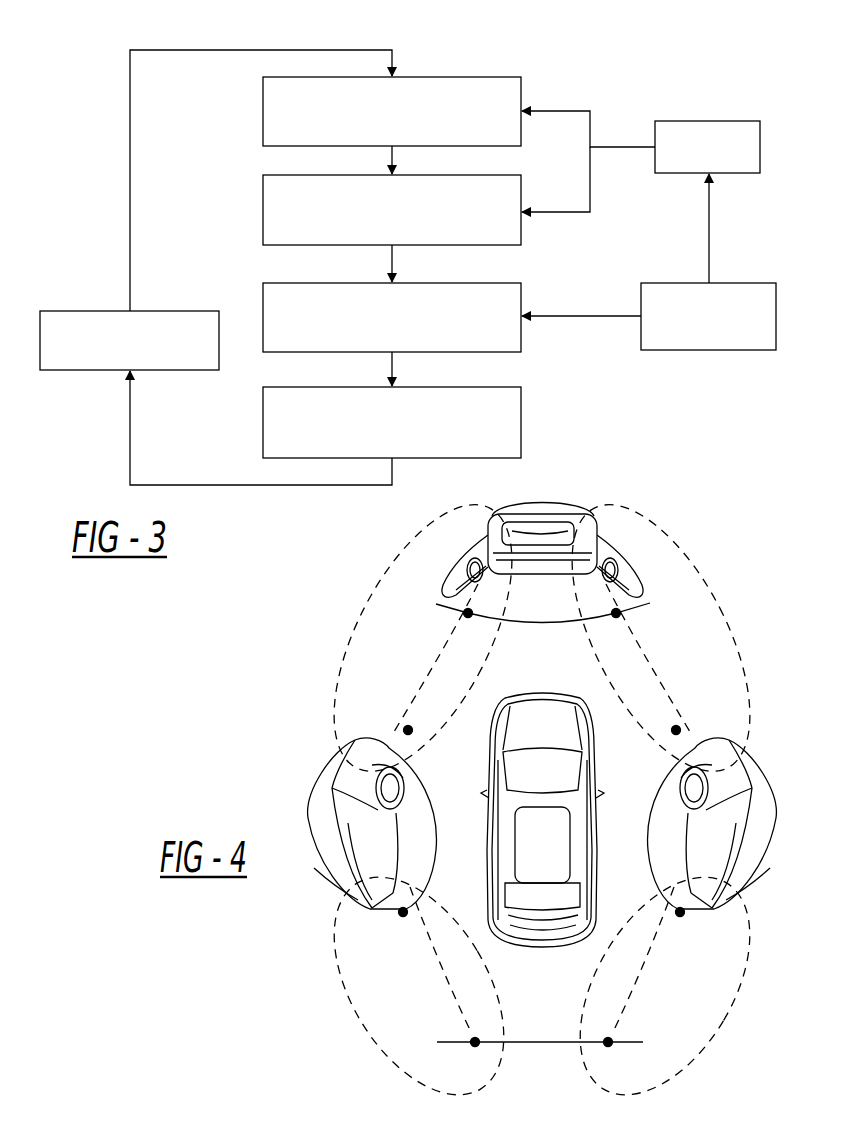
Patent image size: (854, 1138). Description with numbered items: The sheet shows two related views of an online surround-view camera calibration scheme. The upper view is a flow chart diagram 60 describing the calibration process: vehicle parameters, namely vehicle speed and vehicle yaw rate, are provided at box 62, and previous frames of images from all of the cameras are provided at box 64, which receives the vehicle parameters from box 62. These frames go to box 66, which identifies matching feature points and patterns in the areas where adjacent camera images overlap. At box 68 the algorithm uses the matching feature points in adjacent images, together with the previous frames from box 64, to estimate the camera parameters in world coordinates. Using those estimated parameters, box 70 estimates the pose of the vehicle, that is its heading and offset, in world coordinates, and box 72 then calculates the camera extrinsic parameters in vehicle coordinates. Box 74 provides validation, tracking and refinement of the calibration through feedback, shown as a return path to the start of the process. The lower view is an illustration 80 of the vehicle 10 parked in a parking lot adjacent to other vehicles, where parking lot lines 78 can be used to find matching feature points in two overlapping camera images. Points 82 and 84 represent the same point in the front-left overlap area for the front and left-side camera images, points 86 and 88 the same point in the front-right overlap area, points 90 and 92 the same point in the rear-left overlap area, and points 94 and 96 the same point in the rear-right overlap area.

In FIG. 4, the vehicle 10 is at (541, 687).
In FIG. 3, the flow chart diagram 60 is at (647, 66).
In FIG. 3, the box 62 is at (704, 350).
In FIG. 3, the box 64 is at (707, 121).
In FIG. 3, the box 66 is at (472, 77).
In FIG. 3, the box 68 is at (521, 228).
In FIG. 3, the box 70 is at (521, 330).
In FIG. 3, the box 72 is at (521, 413).
In FIG. 3, the box 74 is at (187, 311).
In FIG. 4, the parking lot lines 78 is at (433, 817).
In FIG. 4, the illustration 80 is at (677, 497).
In FIG. 4, the point 82 is at (468, 613).
In FIG. 4, the point 84 is at (408, 730).
In FIG. 4, the point 86 is at (616, 613).
In FIG. 4, the point 88 is at (676, 730).
In FIG. 4, the point 90 is at (403, 912).
In FIG. 4, the point 92 is at (475, 1042).
In FIG. 4, the point 94 is at (680, 912).
In FIG. 4, the point 96 is at (608, 1042).